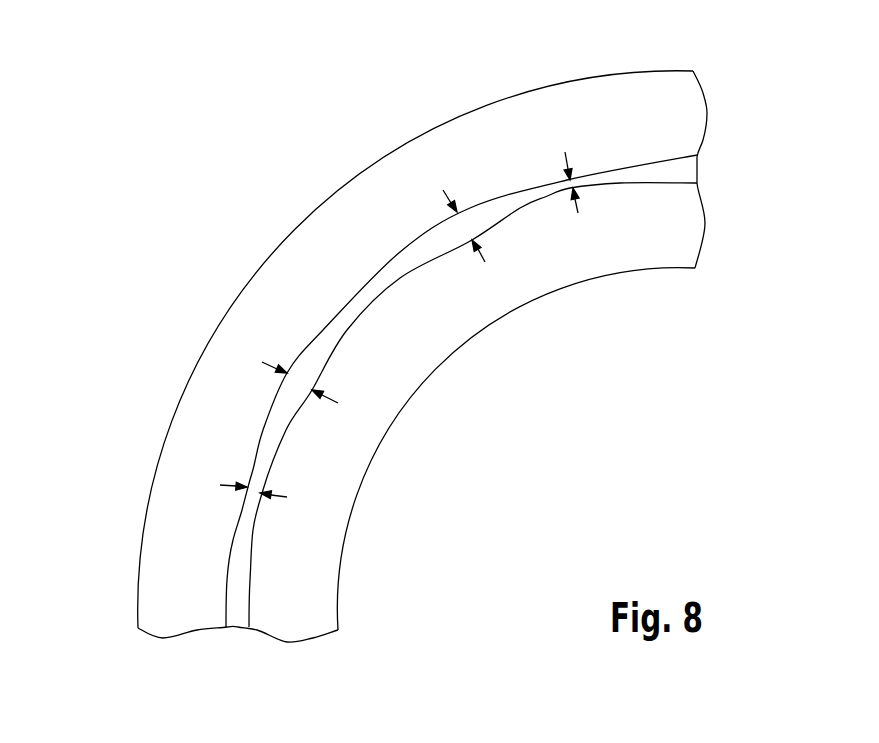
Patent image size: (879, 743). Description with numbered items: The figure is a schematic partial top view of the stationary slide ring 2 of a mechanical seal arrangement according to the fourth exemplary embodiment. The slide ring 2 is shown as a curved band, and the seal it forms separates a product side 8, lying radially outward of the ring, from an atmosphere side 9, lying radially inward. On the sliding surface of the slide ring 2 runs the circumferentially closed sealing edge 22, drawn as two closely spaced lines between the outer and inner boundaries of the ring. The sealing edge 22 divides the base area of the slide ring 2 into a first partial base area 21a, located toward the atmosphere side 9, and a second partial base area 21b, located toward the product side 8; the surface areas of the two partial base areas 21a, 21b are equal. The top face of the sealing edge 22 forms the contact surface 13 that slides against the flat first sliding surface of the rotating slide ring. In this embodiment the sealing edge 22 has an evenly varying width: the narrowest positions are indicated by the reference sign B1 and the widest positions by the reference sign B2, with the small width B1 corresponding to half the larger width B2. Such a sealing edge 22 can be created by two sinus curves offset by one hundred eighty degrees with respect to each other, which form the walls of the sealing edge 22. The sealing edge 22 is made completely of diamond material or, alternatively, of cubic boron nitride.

The stationary slide ring 2 is at (147, 238).
The product side 8 is at (240, 227).
The atmosphere side 9 is at (463, 463).
The contact surface 13 is at (668, 176).
The first partial base area 21a is at (618, 265).
The second partial base area 21b is at (620, 95).
The sealing edge 22 is at (425, 250).
The narrowest width of the sealing edge B1 is at (563, 182).
The widest width of the sealing edge B2 is at (465, 228).